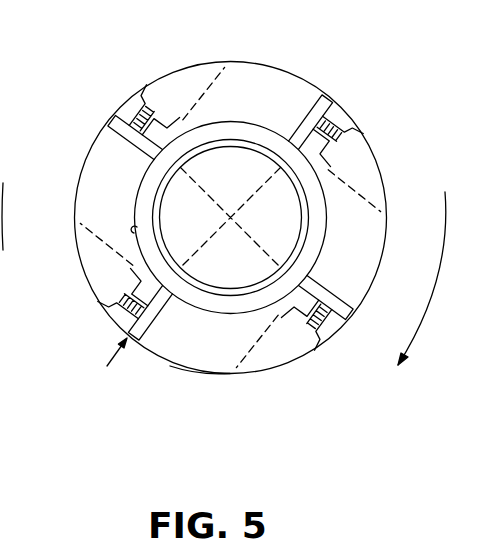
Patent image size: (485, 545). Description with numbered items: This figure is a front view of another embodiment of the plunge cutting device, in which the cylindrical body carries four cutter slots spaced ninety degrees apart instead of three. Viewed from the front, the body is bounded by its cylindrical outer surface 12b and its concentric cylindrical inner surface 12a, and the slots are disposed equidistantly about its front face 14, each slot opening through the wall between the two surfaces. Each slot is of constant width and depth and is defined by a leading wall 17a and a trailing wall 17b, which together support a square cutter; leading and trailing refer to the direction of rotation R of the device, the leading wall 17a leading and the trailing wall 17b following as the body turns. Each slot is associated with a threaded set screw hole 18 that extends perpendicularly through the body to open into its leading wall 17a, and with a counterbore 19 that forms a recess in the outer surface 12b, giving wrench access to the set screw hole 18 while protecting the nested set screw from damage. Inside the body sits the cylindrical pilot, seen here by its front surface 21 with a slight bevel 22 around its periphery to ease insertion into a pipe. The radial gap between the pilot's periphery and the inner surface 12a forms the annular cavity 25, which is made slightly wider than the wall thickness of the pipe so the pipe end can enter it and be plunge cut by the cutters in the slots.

The cylindrical inner surface 12a is at (132, 232).
The cylindrical outer surface 12b is at (191, 374).
The front face 14 is at (190, 344).
The leading wall 17a is at (113, 116).
The trailing wall 17b is at (110, 125).
The threaded set screw hole 18 is at (107, 312).
The counterbore 19 is at (200, 68).
The front surface 21 is at (285, 242).
The bevel 22 is at (280, 241).
The annular cavity 25 is at (253, 132).
The direction of rotation R is at (422, 289).